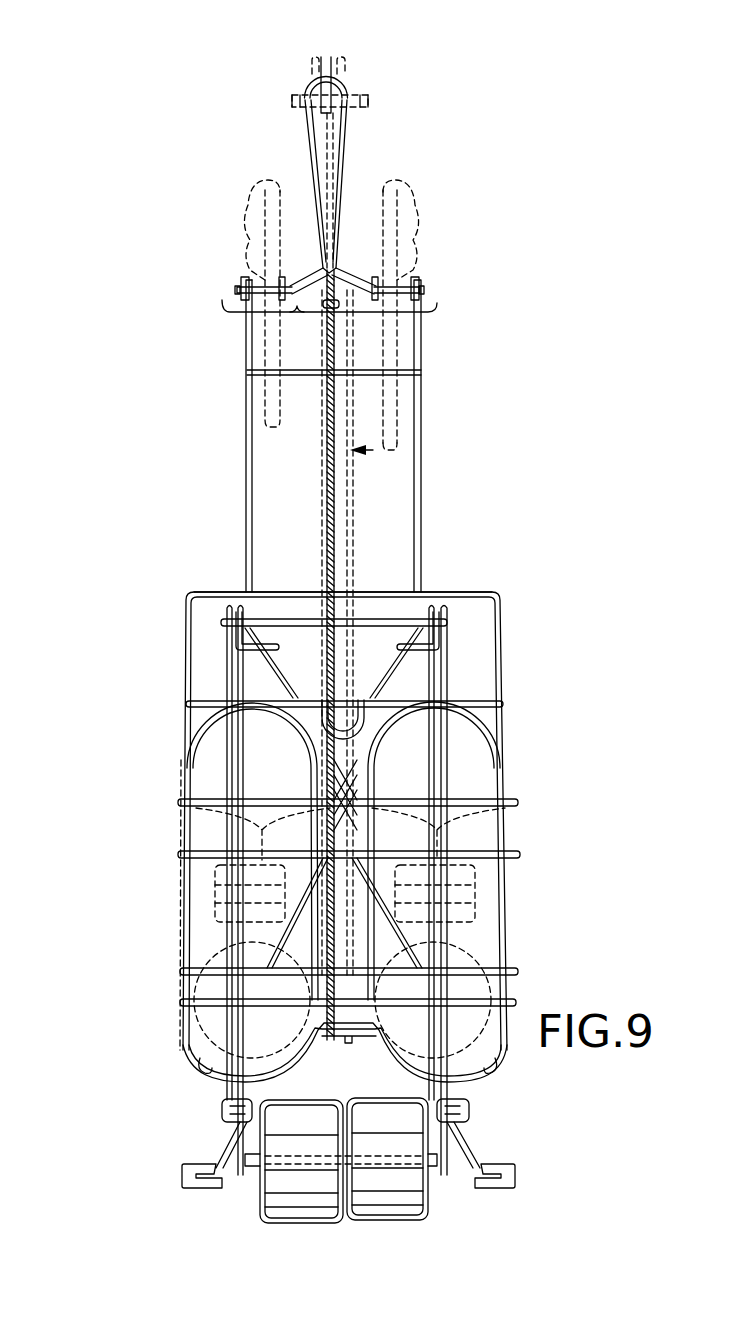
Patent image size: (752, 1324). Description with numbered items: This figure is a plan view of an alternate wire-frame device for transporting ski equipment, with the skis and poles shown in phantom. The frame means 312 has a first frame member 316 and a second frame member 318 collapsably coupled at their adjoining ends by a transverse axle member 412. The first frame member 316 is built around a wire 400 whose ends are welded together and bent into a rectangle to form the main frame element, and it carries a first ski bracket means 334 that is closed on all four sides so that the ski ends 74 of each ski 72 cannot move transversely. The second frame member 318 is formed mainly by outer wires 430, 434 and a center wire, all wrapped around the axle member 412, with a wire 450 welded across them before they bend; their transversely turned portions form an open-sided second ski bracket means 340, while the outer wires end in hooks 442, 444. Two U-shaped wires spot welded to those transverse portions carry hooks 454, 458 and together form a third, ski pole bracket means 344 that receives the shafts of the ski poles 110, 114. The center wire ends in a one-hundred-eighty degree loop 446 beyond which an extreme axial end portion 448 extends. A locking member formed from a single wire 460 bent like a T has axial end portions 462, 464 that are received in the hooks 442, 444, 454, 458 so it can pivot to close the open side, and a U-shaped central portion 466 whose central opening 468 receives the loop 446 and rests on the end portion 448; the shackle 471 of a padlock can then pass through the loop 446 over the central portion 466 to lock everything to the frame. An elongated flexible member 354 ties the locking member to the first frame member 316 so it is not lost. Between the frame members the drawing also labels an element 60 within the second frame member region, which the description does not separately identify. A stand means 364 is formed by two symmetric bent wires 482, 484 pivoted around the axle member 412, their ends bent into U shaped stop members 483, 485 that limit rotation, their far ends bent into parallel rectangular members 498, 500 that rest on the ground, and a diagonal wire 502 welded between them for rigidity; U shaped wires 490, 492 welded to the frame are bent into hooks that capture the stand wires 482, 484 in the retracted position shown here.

The extreme axial end portion 448 is at (315, 60).
The 180 degree loop 446 is at (345, 90).
The central opening 468 is at (312, 96).
The shackle 471 is at (368, 80).
The wire 460 is at (352, 126).
The central portion 466 is at (340, 160).
The second ski bracket means 340 is at (368, 285).
The hook 454 is at (242, 283).
The hook 442 is at (283, 277).
The hook 444 is at (373, 277).
The axial end portion 464 is at (420, 283).
The hook 458 is at (422, 293).
The tube 60 is at (289, 305).
The ski pole 110 is at (262, 411).
The axial end portion 462 is at (255, 265).
The ski pole bracket means 344 is at (240, 262).
The ski pole 114 is at (412, 348).
The second frame member 318 is at (246, 482).
The wire 430 is at (250, 447).
The wire 434 is at (421, 393).
The wire 450 is at (252, 388).
The elongated flexible member 354 is at (349, 468).
The ski 72 is at (352, 497).
The wire 400 is at (205, 592).
The frame means 312 is at (178, 592).
The transverse axle member 412 is at (277, 612).
The stand means wire 482 is at (227, 675).
The stand means wire 484 is at (447, 668).
The U shaped stop member 483 is at (295, 640).
The U shaped stop member 485 is at (402, 640).
The diagonal wire 502 is at (278, 672).
The first frame member 316 is at (185, 692).
The first ski bracket means 334 is at (365, 730).
The ski end 74 is at (349, 1054).
The U shaped wire 490 is at (222, 1106).
The U shaped wire 492 is at (470, 1108).
The rectangular member 498 is at (196, 1163).
The rectangular member 500 is at (502, 1160).
The stand means 364 is at (168, 1174).